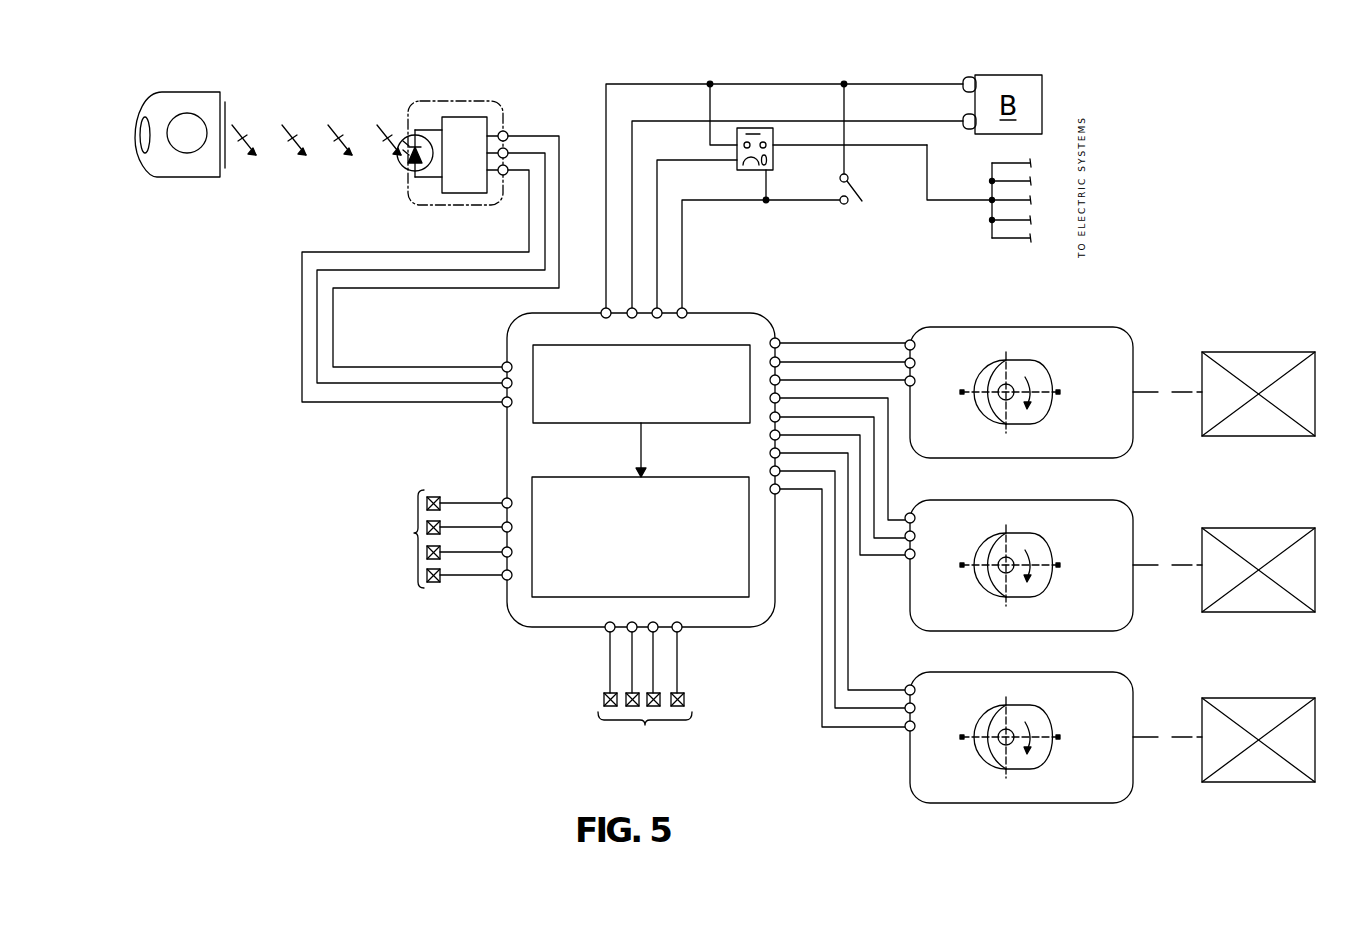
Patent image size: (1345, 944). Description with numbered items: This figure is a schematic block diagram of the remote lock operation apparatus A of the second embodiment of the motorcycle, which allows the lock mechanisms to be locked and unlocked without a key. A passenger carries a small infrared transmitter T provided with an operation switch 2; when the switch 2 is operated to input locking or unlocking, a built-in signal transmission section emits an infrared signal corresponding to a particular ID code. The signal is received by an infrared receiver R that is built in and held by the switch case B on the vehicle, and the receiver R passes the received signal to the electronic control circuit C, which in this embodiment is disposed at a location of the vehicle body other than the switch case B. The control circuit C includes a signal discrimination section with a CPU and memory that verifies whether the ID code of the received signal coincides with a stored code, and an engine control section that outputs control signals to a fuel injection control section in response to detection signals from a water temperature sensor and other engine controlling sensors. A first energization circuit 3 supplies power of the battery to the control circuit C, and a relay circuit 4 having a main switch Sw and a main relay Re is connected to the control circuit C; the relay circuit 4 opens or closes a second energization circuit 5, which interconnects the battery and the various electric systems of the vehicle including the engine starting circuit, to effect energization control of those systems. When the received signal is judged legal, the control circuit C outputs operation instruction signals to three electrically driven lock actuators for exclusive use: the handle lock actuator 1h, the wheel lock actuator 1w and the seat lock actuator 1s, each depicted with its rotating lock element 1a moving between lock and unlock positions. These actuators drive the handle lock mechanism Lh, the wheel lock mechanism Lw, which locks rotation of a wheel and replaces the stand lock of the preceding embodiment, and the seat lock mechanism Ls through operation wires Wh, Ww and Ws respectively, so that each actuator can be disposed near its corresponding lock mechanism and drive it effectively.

The infrared transmitter T is at (163, 180).
The operation switch 2 is at (196, 148).
The switch case B is at (404, 201).
The infrared receiver R is at (462, 178).
The first energization circuit 3 is at (672, 121).
The main relay Re is at (773, 161).
The relay circuit 4 is at (800, 200).
The main switch Sw is at (862, 201).
The second energization circuit 5 is at (945, 202).
The electronic control circuit C is at (507, 619).
The remote lock operation apparatus A is at (324, 676).
The handle lock actuator 1h is at (919, 325).
The wheel lock actuator 1w is at (904, 591).
The seat lock actuator 1s is at (904, 784).
The lock actuator cam 1a is at (1047, 412).
The handle lock operation wire Wh is at (1163, 397).
The wheel lock operation wire Ww is at (1163, 570).
The seat lock operation wire Ws is at (1163, 742).
The handle lock mechanism Lh is at (1242, 440).
The wheel lock mechanism Lw is at (1242, 616).
The seat lock mechanism Ls is at (1242, 787).